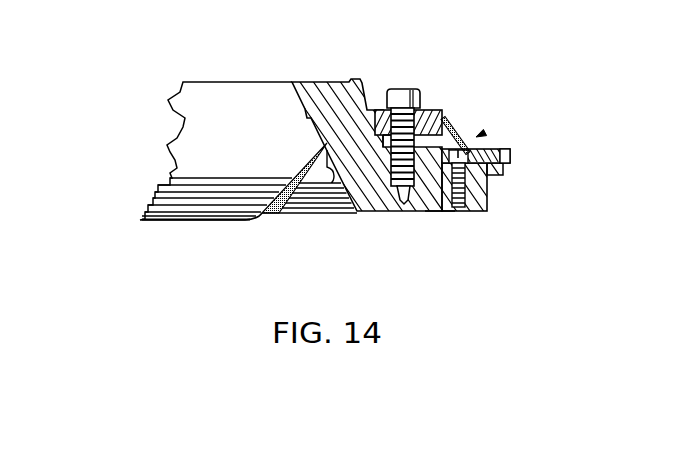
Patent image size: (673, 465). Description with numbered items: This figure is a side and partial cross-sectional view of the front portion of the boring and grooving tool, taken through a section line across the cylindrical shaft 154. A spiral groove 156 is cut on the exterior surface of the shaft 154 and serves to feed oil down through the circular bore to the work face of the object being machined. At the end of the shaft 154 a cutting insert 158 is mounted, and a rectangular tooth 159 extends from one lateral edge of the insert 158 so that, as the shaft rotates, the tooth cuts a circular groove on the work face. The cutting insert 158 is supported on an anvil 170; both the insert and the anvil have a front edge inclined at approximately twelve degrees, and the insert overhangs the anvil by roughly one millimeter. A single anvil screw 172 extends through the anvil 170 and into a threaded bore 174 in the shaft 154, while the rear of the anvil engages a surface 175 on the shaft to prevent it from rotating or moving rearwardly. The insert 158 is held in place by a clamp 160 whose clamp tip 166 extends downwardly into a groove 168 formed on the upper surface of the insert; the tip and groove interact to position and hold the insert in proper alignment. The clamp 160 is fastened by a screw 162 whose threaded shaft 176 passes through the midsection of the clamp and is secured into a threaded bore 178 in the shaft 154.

The cylindrical shaft 154 is at (230, 92).
The spiral groove 156 is at (275, 215).
The cutting insert 158 is at (490, 146).
The rectangular tooth 159 is at (510, 152).
The clamp 160 is at (443, 110).
The screw 162 is at (407, 89).
The clamp tip 166 is at (453, 122).
The groove 168 is at (480, 134).
The anvil 170 is at (498, 174).
The anvil screw 172 is at (488, 188).
The threaded bore 174 is at (452, 208).
The surface 175 is at (440, 206).
The threaded shaft 176 is at (425, 108).
The threaded bore 178 is at (404, 206).